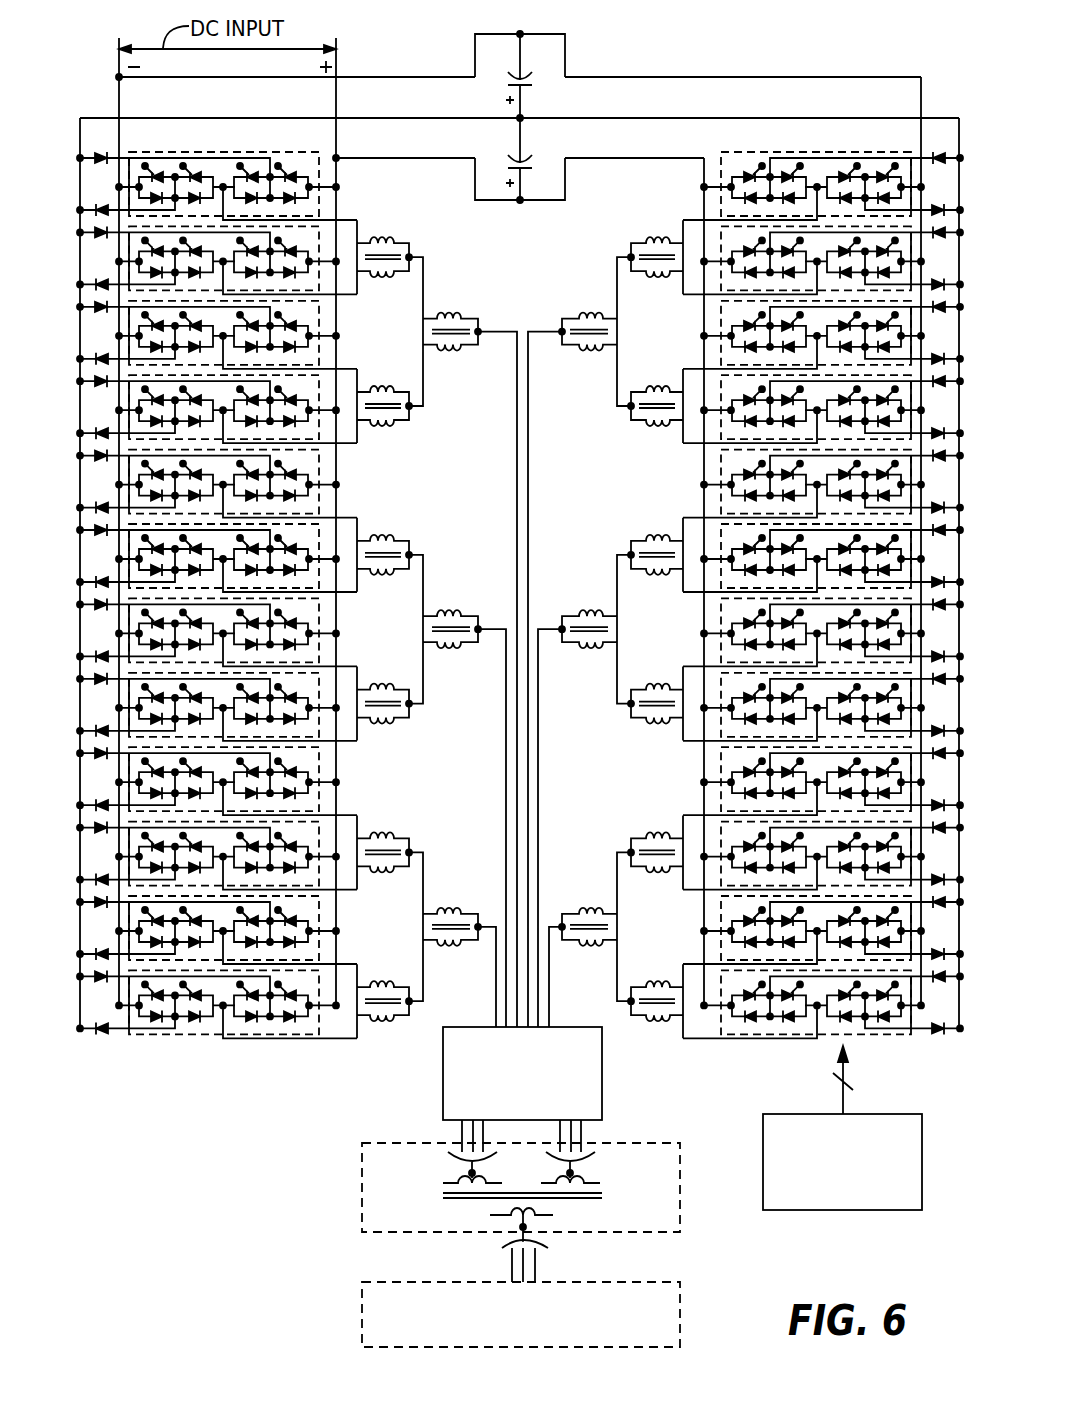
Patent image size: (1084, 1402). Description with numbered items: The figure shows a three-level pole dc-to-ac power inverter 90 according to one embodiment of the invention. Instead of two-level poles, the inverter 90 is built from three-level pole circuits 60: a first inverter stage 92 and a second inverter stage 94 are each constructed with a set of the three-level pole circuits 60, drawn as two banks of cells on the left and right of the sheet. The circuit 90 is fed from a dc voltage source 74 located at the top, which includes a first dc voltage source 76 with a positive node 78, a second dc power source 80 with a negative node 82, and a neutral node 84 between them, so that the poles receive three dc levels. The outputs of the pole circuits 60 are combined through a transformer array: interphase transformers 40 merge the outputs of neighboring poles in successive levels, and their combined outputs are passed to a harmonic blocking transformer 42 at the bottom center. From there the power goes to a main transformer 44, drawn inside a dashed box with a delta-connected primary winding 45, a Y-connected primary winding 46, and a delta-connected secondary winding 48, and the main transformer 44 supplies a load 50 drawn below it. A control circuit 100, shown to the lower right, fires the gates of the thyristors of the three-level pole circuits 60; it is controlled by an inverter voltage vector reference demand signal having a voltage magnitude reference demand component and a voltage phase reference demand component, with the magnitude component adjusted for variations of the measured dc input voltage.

The interphase transformer 40 is at (448, 316).
The harmonic blocking transformer 42 is at (603, 1067).
The main transformer 44 is at (549, 1187).
The delta primary winding 45 is at (447, 1166).
The Y primary winding 46 is at (630, 1163).
The delta secondary winding 48 is at (588, 1215).
The load 50 is at (680, 1320).
The three-level pole circuit 60 is at (321, 208).
The dc voltage source 74 is at (530, 120).
The first dc voltage source 76 is at (533, 162).
The positive node 78 is at (542, 201).
The second dc power source 80 is at (532, 80).
The negative node 82 is at (475, 34).
The neutral node 84 is at (518, 118).
The three-level pole inverter 90 is at (742, 60).
The first inverter stage 92 is at (150, 1046).
The second inverter stage 94 is at (773, 1055).
The control circuit 100 is at (863, 1211).